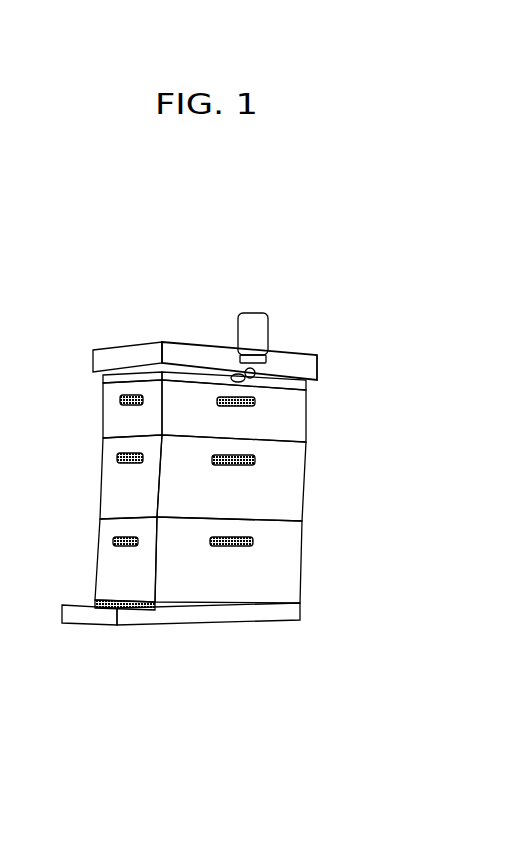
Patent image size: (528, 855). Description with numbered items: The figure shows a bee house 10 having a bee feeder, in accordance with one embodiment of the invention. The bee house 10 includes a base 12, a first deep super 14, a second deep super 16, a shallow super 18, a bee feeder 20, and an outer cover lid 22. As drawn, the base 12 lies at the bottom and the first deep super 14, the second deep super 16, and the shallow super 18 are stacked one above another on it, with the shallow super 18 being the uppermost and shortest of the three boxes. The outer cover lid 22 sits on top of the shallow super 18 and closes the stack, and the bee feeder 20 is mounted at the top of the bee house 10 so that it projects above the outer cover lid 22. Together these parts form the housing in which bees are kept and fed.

The bee house 10 is at (105, 320).
The base 12 is at (293, 613).
The first deep super 14 is at (290, 562).
The second deep super 16 is at (288, 488).
The shallow super 18 is at (293, 416).
The bee feeder 20 is at (307, 379).
The outer cover lid 22 is at (296, 362).